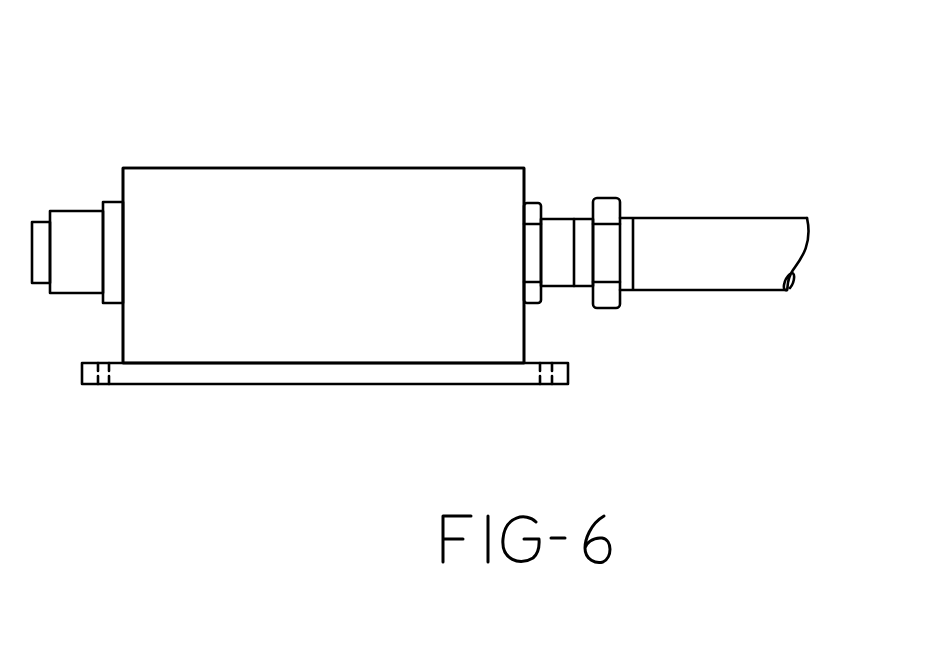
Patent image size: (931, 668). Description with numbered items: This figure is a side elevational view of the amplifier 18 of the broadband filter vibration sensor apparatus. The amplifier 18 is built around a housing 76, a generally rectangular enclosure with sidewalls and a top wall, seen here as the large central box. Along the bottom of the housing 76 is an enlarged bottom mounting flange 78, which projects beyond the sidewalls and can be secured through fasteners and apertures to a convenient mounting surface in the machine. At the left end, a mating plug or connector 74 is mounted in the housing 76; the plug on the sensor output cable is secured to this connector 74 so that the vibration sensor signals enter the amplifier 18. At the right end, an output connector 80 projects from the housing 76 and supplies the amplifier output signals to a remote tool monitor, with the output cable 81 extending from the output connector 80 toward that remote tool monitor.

The amplifier 18 is at (435, 52).
The mating plug or connector 74 is at (73, 226).
The housing 76 is at (270, 190).
The bottom mounting flange 78 is at (407, 381).
The output connector 80 is at (558, 225).
The output cable 81 is at (673, 237).